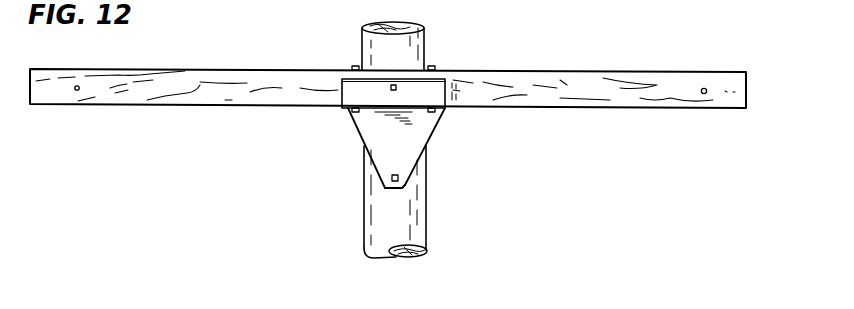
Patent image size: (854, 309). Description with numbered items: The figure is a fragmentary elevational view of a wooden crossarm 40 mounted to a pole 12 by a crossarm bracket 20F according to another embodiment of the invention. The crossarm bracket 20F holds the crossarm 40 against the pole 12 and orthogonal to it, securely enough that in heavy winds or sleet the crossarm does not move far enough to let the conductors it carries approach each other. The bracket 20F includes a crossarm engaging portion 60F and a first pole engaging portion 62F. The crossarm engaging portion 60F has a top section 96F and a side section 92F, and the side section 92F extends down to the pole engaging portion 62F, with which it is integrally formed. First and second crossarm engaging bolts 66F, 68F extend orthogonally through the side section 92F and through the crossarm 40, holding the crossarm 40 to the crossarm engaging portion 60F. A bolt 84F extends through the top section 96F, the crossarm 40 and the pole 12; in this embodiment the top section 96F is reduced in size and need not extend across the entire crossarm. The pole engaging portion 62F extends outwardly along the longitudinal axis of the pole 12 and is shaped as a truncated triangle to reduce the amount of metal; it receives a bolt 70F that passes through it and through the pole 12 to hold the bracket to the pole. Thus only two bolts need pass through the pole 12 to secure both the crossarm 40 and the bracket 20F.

The pole 12 is at (376, 212).
The wooden crossarm 40 is at (195, 92).
The crossarm bracket 20F is at (398, 113).
The crossarm engaging portion 60F is at (456, 80).
The bolt 84F is at (391, 84).
The top section 96F is at (358, 88).
The second crossarm engaging bolt 68F is at (437, 110).
The first crossarm engaging bolt 66F is at (356, 111).
The first pole engaging portion 62F is at (427, 143).
The side section 92F is at (412, 141).
The bolt 70F is at (407, 179).